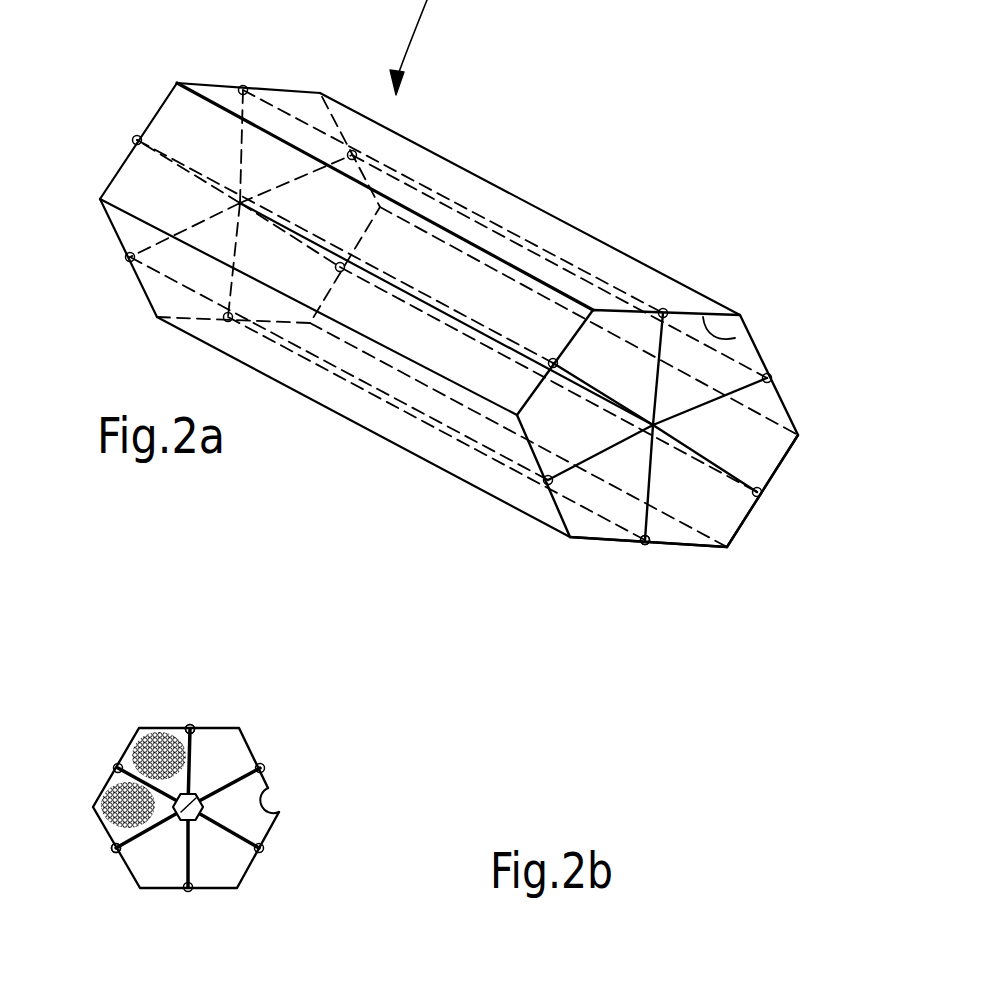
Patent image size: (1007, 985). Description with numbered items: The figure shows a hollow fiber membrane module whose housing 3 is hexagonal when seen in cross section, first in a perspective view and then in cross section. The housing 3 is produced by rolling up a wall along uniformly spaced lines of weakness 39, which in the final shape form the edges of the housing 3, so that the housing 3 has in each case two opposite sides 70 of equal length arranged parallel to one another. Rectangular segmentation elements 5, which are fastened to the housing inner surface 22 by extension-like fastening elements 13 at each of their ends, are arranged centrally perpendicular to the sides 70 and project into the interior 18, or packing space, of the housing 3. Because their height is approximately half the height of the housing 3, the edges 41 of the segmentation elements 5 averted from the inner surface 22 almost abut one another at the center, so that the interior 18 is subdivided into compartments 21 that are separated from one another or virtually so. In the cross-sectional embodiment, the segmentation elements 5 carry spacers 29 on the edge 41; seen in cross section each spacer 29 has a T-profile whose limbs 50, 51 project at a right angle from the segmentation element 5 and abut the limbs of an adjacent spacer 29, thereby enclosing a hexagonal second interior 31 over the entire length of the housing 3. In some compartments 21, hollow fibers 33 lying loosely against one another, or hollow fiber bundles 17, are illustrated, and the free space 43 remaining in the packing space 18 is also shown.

In FIG. 2A, the housing 3 is at (470, 172).
In FIG. 2B, the housing 3 is at (250, 870).
In FIG. 2A, the segmentation elements 5 is at (703, 408).
In FIG. 2A, the fastening elements 13 is at (646, 548).
In FIG. 2B, the fastening elements 13 is at (191, 727).
In FIG. 2B, the hollow fiber bundles 17 is at (126, 743).
In FIG. 2A, the interior 18 is at (707, 500).
In FIG. 2A, the compartments 21 is at (603, 520).
In FIG. 2A, the housing inner surface 22 is at (735, 338).
In FIG. 2B, the housing inner surface 22 is at (273, 815).
In FIG. 2B, the spacers 29 is at (194, 790).
In FIG. 2B, the second interior 31 is at (203, 790).
In FIG. 2B, the hollow fibers 33 is at (158, 733).
In FIG. 2A, the lines of weakness 39 is at (520, 200).
In FIG. 2A, the edges 41 is at (650, 430).
In FIG. 2B, the edges 41 is at (200, 820).
In FIG. 2B, the free space 43 is at (113, 849).
In FIG. 2B, the limb 50 is at (187, 823).
In FIG. 2B, the limb 51 is at (145, 833).
In FIG. 2A, the sides 70 is at (637, 310).